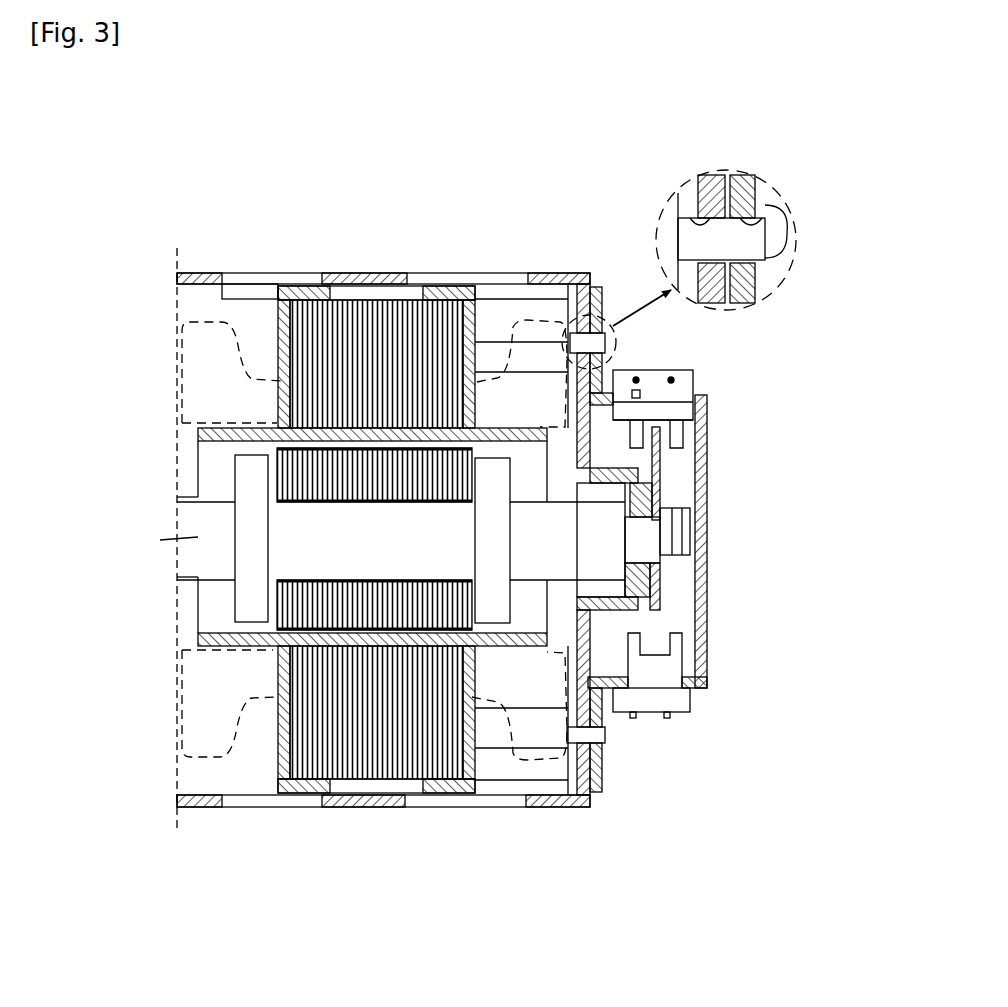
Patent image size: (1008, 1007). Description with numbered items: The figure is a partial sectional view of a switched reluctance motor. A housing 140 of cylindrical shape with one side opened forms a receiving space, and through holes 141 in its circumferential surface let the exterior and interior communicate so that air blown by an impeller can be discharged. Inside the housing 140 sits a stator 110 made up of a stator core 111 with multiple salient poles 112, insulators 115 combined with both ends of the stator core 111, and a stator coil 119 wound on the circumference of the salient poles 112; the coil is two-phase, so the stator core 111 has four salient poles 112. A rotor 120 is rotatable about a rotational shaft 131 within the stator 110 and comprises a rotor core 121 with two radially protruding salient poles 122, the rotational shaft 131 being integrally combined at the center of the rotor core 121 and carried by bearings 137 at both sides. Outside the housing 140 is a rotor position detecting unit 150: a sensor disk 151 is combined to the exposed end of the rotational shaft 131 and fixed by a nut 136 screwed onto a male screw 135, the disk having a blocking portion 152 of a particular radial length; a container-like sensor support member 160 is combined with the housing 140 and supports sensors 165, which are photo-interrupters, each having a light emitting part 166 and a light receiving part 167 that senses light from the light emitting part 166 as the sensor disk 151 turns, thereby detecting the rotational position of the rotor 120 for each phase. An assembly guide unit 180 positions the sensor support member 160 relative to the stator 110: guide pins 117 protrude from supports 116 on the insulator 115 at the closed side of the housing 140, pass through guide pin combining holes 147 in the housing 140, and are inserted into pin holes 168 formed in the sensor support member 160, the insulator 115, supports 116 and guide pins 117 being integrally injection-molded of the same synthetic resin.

The stator 110 is at (100, 280).
The stator core 111 is at (308, 343).
The salient poles 112 is at (297, 678).
The insulator 115 is at (282, 297).
The support 116 is at (672, 213).
The guide pin 117 is at (790, 217).
The stator coil 119 is at (200, 376).
The rotor 120 is at (100, 448).
The rotor core 121 is at (290, 468).
The salient poles 122 is at (285, 622).
The rotational shaft 131 is at (192, 516).
The male screw 135 is at (690, 546).
The nut 136 is at (662, 515).
The bearing 137 is at (600, 582).
The housing 140 is at (570, 277).
The through hole 141 is at (528, 273).
The guide pin combining hole 147 is at (692, 212).
The rotor position detecting unit 150 is at (770, 700).
The sensor disk 151 is at (667, 477).
The blocking portion 152 is at (660, 452).
The sensor support member 160 is at (708, 645).
The sensor 165 is at (805, 352).
The light emitting part 166 is at (658, 425).
The light receiving part 167 is at (672, 447).
The pin hole 168 is at (772, 210).
The assembly guide unit 180 is at (848, 108).